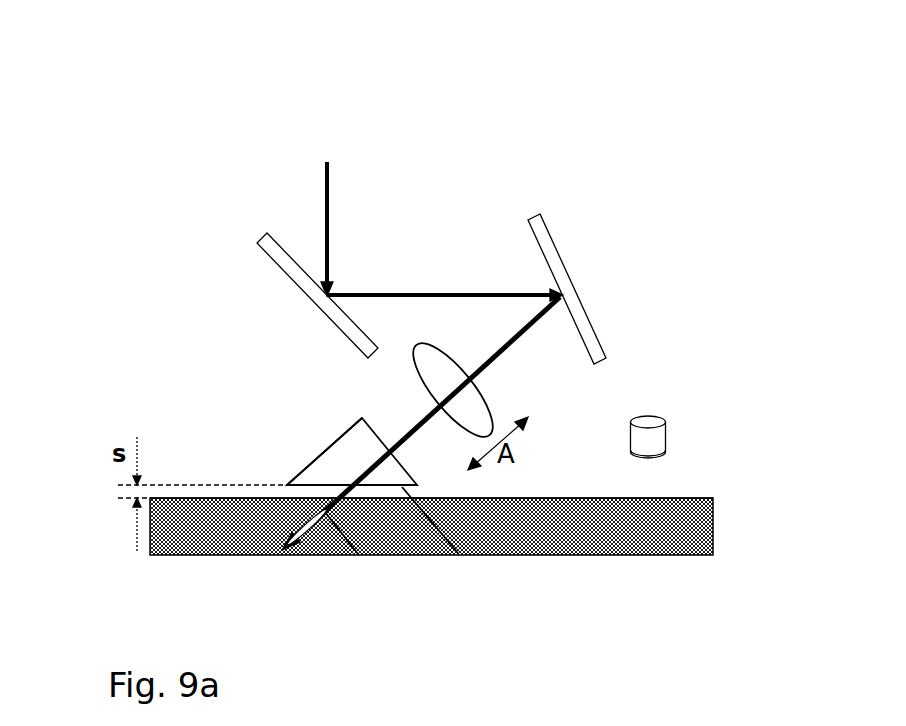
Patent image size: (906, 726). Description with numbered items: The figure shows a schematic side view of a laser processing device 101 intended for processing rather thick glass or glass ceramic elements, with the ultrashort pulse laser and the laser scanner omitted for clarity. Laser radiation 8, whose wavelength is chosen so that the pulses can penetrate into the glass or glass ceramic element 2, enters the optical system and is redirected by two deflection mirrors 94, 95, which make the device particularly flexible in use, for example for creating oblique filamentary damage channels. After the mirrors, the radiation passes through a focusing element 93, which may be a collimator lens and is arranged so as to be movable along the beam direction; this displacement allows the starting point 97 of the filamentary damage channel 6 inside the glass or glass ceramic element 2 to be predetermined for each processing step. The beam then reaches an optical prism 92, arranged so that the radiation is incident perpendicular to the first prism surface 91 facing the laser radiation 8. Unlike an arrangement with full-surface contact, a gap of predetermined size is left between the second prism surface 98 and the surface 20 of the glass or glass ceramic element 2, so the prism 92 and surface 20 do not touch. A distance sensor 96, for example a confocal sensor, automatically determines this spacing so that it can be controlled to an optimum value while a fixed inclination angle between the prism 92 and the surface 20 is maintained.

The laser processing device 101 is at (210, 101).
The laser radiation 8 is at (327, 218).
The deflection mirror 94 is at (283, 273).
The deflection mirror 95 is at (557, 248).
The focusing element 93 is at (490, 403).
The first prism surface 91 is at (375, 430).
The optical prism 92 is at (310, 460).
The distance sensor 96 is at (668, 422).
The surface 20 is at (693, 497).
The glass or glass ceramic element 2 is at (667, 555).
The second prism surface 98 is at (458, 555).
The starting point 97 is at (358, 555).
The filamentary damage channel 6 is at (303, 555).